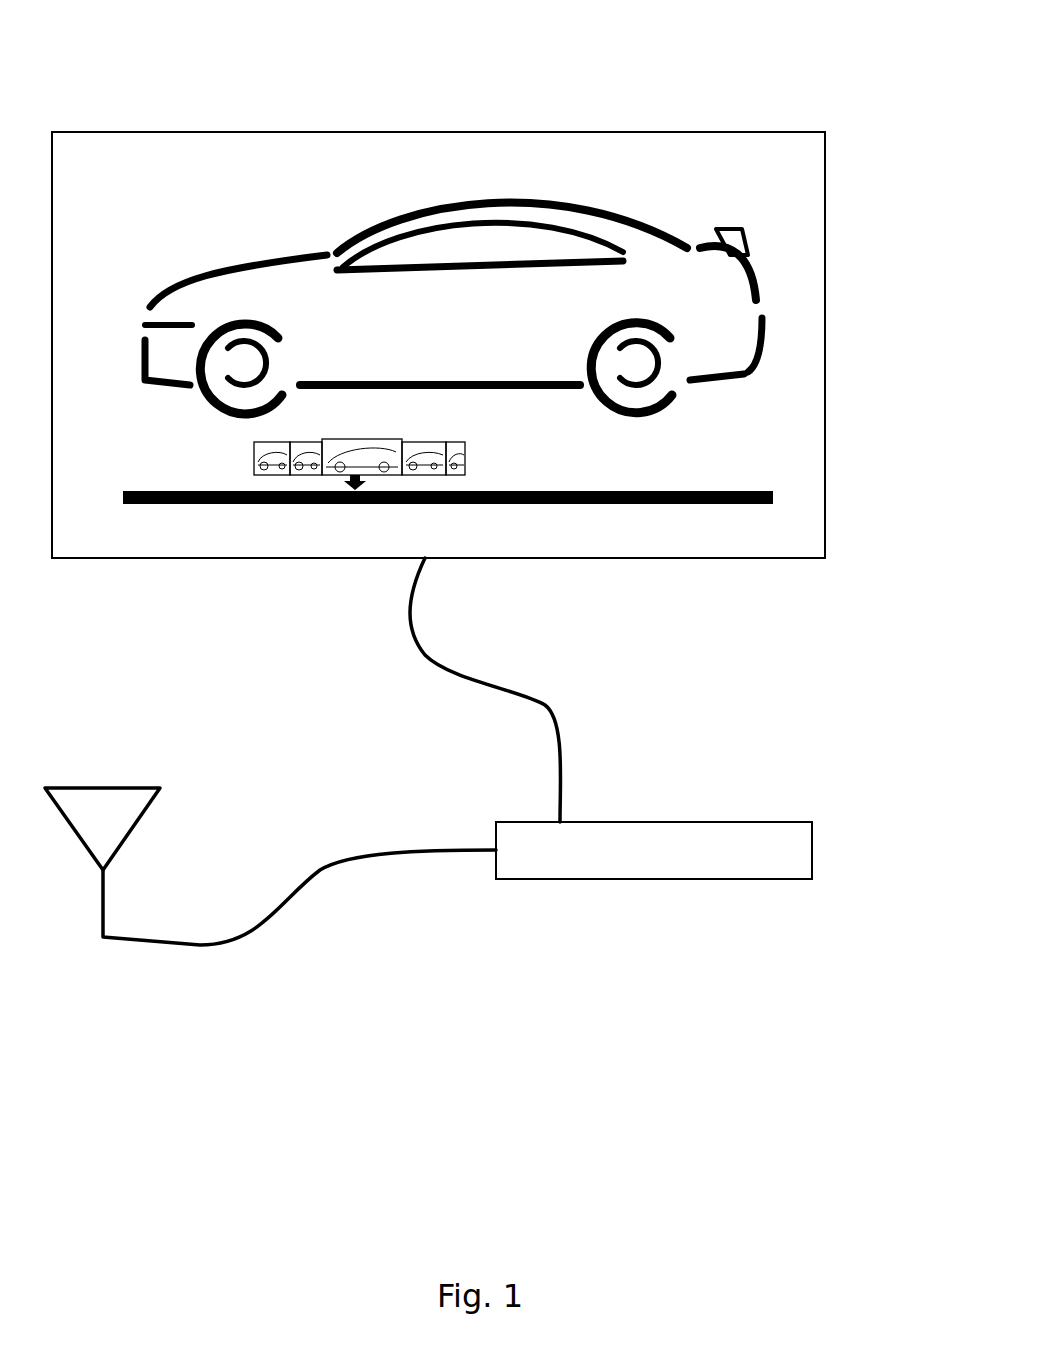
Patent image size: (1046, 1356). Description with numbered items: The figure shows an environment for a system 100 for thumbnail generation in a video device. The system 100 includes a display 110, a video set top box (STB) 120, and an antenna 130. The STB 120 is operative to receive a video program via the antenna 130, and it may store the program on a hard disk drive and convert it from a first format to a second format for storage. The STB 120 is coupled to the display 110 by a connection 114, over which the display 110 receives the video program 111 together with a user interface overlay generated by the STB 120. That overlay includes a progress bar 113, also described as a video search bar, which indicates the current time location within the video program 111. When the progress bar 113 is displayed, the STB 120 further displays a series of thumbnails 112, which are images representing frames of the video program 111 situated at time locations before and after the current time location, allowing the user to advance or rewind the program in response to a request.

The system 100 is at (423, 22).
The display 110 is at (738, 128).
The video program 111 is at (795, 270).
The thumbnail images 112 is at (470, 449).
The progress bar 113 is at (790, 499).
The cable 114 is at (560, 750).
The video set top box (STB) 120 is at (654, 850).
The antenna 130 is at (158, 818).